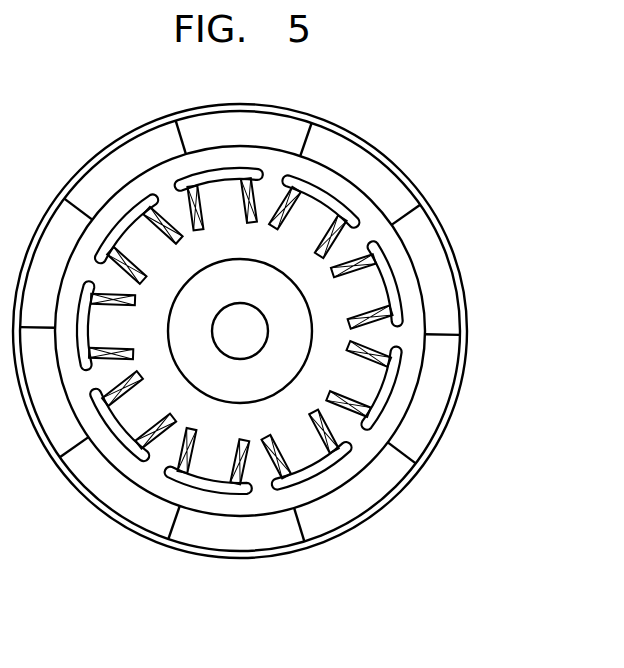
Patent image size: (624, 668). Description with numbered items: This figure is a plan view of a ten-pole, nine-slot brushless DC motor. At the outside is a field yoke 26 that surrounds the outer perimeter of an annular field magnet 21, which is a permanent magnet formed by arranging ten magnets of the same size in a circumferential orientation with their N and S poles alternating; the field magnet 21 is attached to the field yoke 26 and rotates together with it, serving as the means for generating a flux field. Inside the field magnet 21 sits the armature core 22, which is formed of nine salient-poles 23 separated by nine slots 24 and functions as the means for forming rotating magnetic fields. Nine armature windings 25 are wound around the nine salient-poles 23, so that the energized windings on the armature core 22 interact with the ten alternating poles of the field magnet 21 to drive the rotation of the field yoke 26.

The field magnet 21 is at (417, 242).
The armature core 22 is at (301, 376).
The salient-pole 23 is at (284, 335).
The slot 24 is at (353, 427).
The armature winding 25 is at (323, 437).
The field yoke 26 is at (265, 560).